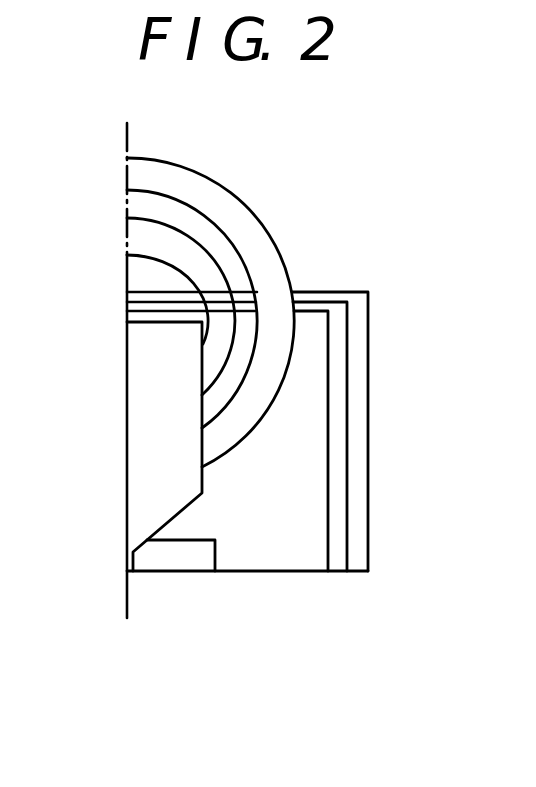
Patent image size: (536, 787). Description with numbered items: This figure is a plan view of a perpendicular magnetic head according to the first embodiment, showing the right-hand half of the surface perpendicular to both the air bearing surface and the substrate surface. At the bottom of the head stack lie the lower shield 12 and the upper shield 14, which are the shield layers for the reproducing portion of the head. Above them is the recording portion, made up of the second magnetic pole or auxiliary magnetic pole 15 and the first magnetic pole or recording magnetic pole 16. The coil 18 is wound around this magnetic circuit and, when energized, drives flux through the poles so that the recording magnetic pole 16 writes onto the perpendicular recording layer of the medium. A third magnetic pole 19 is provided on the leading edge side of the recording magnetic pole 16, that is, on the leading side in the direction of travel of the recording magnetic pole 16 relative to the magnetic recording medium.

The lower shield 12 is at (355, 473).
The upper shield 14 is at (330, 512).
The second magnetic pole or auxiliary magnetic pole 15 is at (233, 500).
The first magnetic pole or recording magnetic pole 16 is at (137, 438).
The coil 18 is at (252, 228).
The third magnetic pole 19 is at (177, 560).